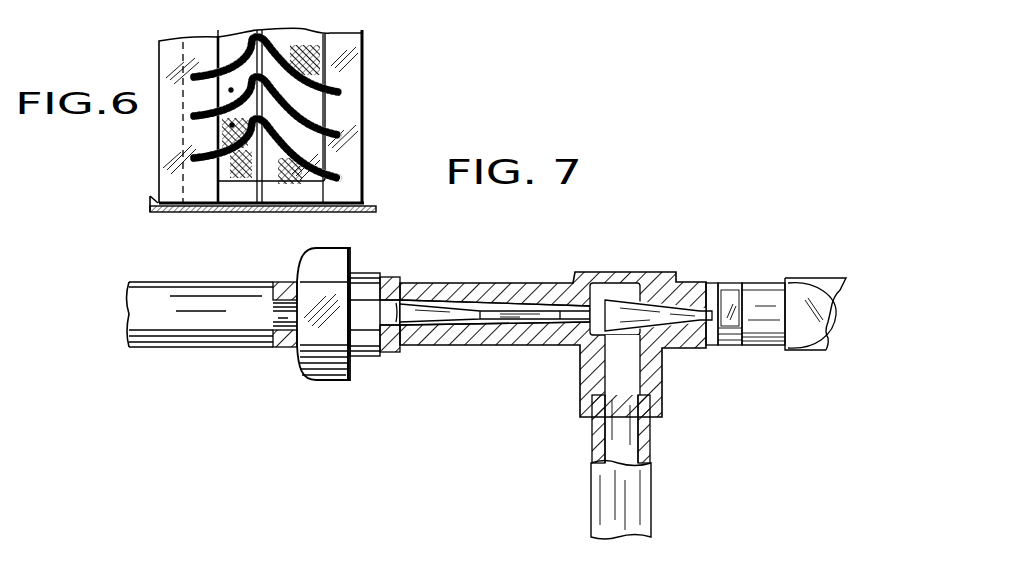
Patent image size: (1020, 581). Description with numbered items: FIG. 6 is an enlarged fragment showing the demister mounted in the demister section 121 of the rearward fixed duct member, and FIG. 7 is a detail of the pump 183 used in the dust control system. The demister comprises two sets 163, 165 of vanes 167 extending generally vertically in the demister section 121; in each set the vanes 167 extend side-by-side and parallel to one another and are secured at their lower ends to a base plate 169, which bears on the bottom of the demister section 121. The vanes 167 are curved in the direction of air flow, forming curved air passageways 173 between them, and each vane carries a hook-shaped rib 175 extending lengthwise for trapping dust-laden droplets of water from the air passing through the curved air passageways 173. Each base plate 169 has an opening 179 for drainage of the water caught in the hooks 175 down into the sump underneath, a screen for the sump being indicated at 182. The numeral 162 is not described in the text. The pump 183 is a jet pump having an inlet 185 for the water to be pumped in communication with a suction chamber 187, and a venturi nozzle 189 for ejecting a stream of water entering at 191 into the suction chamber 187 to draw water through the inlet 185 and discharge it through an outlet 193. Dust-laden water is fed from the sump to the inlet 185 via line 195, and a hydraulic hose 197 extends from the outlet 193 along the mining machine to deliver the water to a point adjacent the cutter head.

In FIG. 6, the demister section 121 is at (370, 213).
In FIG. 6, the element 162 is at (50, 0).
In FIG. 6, the set of vanes 163 is at (582, 0).
In FIG. 6, the set of vanes 165 is at (707, 0).
In FIG. 6, the vane 167 is at (340, 174).
In FIG. 6, the base plate 169 is at (341, 47).
In FIG. 6, the curved air passageway 173 is at (231, 90).
In FIG. 6, the hook-shaped rib 175 is at (256, 40).
In FIG. 6, the opening 179 is at (298, 178).
In FIG. 6, the screen 182 is at (244, 172).
In FIG. 7, the pump 183 is at (528, 254).
In FIG. 7, the inlet 185 is at (662, 382).
In FIG. 7, the suction chamber 187 is at (593, 298).
In FIG. 7, the venturi nozzle 189 is at (606, 350).
In FIG. 7, the water entry 191 is at (688, 292).
In FIG. 7, the outlet 193 is at (388, 312).
In FIG. 6, the line 195 is at (622, 8).
In FIG. 7, the hydraulic hose 197 is at (130, 282).